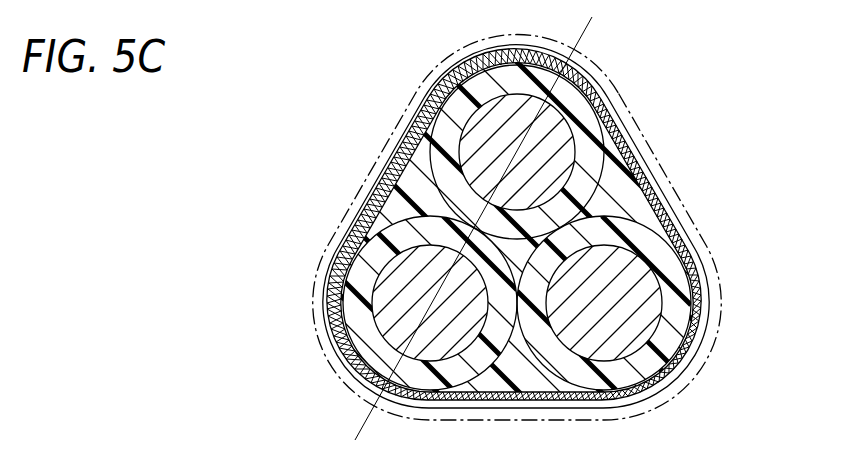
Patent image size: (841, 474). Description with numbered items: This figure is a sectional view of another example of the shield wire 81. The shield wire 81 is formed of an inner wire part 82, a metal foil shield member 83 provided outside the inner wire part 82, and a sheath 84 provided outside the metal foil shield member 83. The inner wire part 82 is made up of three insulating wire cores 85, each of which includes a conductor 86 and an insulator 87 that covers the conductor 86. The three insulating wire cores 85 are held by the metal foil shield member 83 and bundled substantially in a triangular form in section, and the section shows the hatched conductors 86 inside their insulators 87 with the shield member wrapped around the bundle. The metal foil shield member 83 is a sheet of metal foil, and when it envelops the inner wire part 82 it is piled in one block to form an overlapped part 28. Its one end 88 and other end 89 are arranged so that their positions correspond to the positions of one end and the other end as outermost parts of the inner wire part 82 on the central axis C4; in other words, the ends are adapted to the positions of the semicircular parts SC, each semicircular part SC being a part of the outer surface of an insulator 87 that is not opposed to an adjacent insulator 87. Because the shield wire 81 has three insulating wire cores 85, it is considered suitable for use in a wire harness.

The shield wire 81 is at (700, 110).
The inner wire part 82 is at (606, 202).
The metal foil shield member 83 is at (681, 358).
The sheath 84 is at (690, 383).
The insulating wire core 85 is at (553, 137).
The conductor 86 is at (668, 272).
The insulator 87 is at (642, 318).
The one end of the metal foil shield member 88 is at (588, 94).
The other end of the metal foil shield member 89 is at (390, 394).
The overlapped part 28 is at (388, 167).
The semicircular part SC is at (463, 60).
The central axis C4 is at (362, 425).